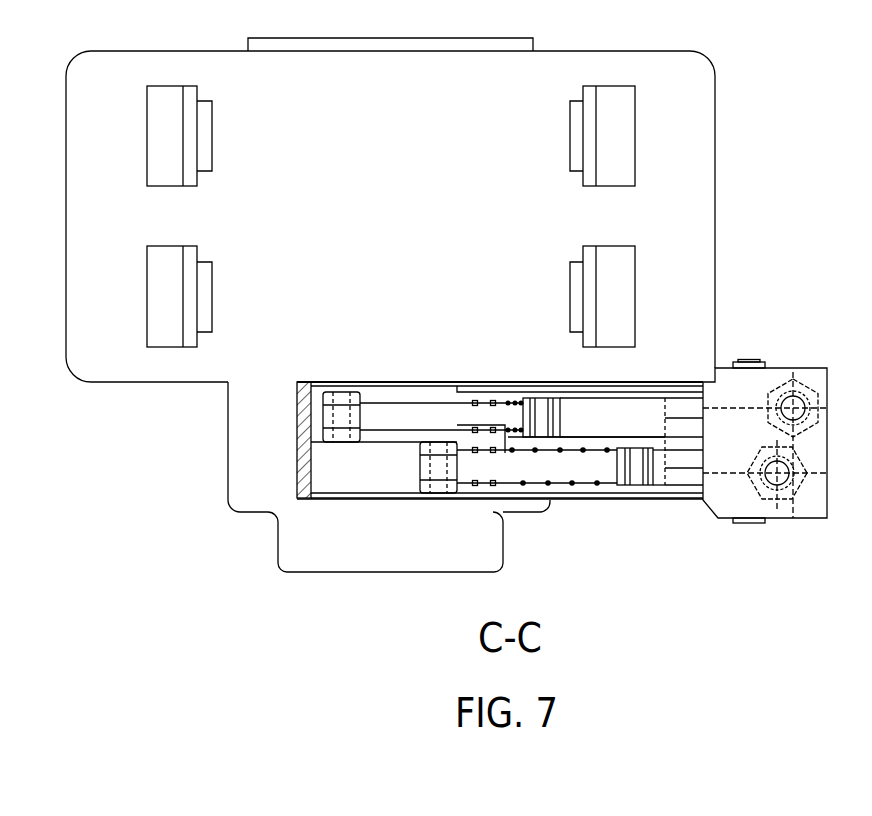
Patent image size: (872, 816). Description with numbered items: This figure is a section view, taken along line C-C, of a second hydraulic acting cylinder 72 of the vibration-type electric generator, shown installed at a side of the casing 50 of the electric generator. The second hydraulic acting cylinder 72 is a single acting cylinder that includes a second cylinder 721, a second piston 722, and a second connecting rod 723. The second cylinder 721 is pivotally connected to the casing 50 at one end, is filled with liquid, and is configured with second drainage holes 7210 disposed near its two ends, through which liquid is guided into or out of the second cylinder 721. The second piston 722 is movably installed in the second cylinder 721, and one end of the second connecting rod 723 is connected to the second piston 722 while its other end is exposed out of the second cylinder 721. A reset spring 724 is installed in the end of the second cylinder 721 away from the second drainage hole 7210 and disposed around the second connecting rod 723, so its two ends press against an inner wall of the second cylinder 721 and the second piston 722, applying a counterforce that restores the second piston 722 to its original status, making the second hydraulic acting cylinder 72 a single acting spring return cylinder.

The casing 50 is at (690, 150).
The second hydraulic acting cylinder 72 is at (681, 381).
The second cylinder 721 is at (636, 396).
The second drainage hole 7210 is at (750, 408).
The second piston 722 is at (543, 425).
The second connecting rod 723 is at (393, 417).
The reset spring 724 is at (597, 487).